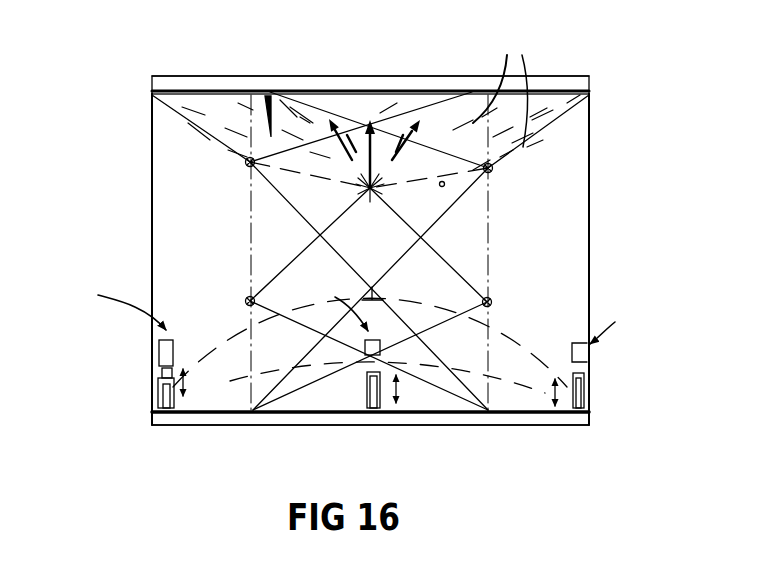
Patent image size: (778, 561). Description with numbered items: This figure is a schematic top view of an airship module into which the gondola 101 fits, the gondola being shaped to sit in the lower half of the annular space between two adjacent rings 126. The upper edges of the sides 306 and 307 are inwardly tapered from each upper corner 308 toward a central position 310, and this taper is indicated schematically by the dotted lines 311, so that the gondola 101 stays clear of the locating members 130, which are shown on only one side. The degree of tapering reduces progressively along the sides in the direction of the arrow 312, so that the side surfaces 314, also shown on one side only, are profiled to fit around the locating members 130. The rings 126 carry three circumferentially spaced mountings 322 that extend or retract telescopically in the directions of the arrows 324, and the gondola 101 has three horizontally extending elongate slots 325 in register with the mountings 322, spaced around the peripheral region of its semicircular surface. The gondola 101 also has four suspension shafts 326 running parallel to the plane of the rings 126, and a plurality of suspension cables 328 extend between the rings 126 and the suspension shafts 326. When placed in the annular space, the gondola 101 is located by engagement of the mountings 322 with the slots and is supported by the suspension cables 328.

The gondola 101 is at (569, 156).
The rings 126 is at (432, 78).
The locating members 130 is at (499, 87).
The side 306 is at (316, 76).
The side 307 is at (427, 414).
The upper corner 308 is at (152, 95).
The central position 310 is at (372, 287).
The dotted lines 311 is at (550, 136).
The arrow 312 is at (403, 147).
The side surfaces 314 is at (268, 95).
The mountings 322 is at (160, 352).
The arrows 324 is at (161, 373).
The elongate slots 325 is at (359, 307).
The suspension shafts 326 is at (249, 166).
The suspension cables 328 is at (296, 213).